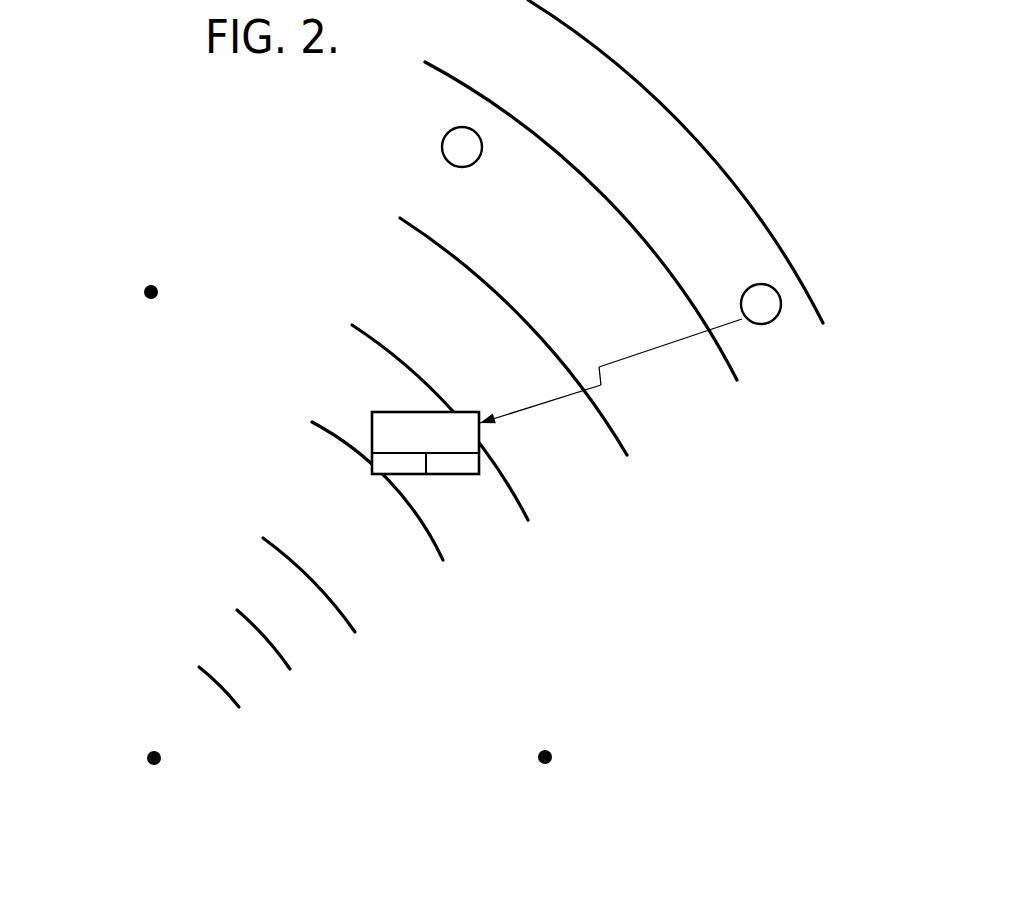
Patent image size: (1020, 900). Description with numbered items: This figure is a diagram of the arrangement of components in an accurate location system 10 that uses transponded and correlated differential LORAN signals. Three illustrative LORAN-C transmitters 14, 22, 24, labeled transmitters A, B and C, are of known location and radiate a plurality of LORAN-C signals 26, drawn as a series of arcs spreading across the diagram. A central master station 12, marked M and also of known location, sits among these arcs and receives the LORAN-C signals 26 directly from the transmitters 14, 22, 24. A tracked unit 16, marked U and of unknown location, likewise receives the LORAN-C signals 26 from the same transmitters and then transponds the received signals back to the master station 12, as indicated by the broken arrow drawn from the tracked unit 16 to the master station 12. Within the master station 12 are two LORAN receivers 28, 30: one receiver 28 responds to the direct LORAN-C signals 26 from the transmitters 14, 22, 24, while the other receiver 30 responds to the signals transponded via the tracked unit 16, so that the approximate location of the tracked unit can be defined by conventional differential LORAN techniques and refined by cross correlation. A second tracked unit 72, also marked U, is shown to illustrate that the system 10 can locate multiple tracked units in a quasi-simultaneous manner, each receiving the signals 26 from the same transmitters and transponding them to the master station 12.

The accurate location system 10 is at (306, 254).
The central master station 12 is at (394, 447).
The LORAN-C transmitter 14 is at (160, 760).
The tracked unit 16 is at (752, 282).
The LORAN-C transmitter 22 is at (152, 299).
The LORAN-C transmitter 24 is at (552, 752).
The LORAN-C signals 26 is at (602, 55).
The LORAN receiver 28 is at (397, 464).
The LORAN receiver 30 is at (452, 467).
The second tracked unit 72 is at (442, 146).